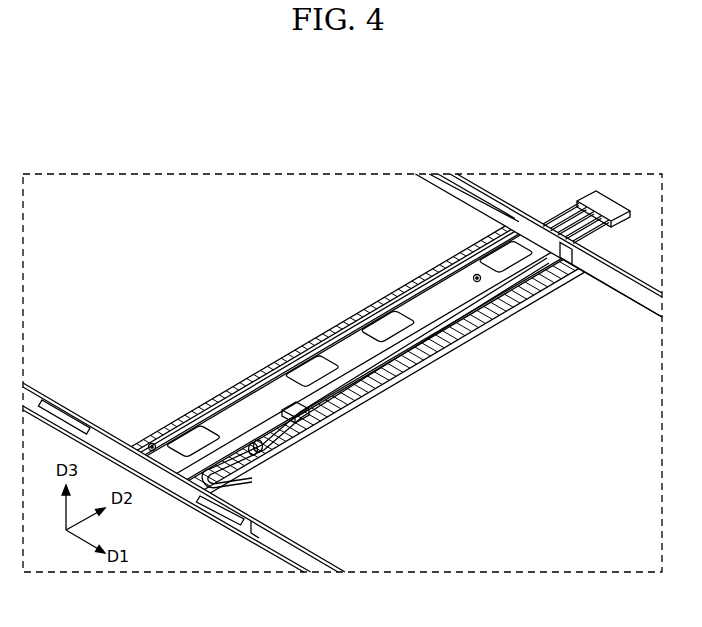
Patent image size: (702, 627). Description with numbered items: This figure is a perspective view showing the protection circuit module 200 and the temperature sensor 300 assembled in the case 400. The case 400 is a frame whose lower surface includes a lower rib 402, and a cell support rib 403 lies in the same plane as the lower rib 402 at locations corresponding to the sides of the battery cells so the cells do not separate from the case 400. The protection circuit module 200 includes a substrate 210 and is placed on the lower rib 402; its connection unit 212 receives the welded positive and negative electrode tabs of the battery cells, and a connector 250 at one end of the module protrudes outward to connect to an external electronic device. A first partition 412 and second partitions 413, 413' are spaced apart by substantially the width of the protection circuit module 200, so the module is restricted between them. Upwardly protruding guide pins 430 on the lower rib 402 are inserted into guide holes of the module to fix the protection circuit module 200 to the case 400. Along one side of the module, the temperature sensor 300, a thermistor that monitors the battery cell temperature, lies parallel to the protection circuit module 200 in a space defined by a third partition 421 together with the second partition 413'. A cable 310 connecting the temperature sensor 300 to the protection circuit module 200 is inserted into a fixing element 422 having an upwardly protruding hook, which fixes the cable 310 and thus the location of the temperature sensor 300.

The protection circuit module 200 is at (381, 297).
The substrate 210 is at (248, 400).
The connection unit 212 is at (195, 428).
The connector 250 is at (612, 226).
The temperature sensor 300 is at (303, 446).
The cable 310 is at (240, 480).
The case 400 is at (509, 197).
The lower rib 402 is at (360, 388).
The cell support rib 403 is at (627, 300).
The first partition 412 is at (426, 279).
The second partition 413 is at (377, 378).
The second partition 413' is at (363, 370).
The third partition 421 is at (302, 436).
The fixing element 422 is at (268, 450).
The guide pin 430 is at (150, 443).